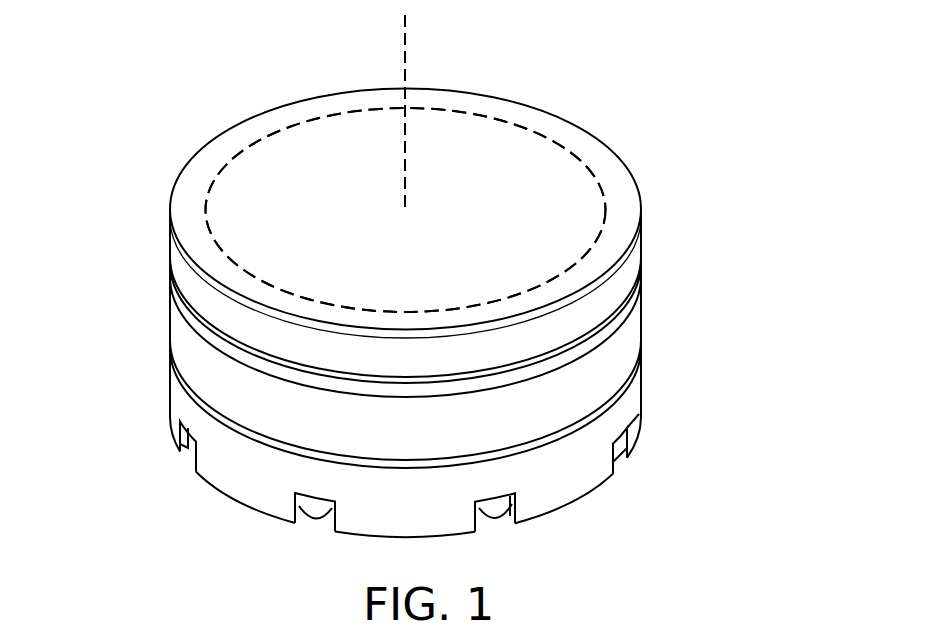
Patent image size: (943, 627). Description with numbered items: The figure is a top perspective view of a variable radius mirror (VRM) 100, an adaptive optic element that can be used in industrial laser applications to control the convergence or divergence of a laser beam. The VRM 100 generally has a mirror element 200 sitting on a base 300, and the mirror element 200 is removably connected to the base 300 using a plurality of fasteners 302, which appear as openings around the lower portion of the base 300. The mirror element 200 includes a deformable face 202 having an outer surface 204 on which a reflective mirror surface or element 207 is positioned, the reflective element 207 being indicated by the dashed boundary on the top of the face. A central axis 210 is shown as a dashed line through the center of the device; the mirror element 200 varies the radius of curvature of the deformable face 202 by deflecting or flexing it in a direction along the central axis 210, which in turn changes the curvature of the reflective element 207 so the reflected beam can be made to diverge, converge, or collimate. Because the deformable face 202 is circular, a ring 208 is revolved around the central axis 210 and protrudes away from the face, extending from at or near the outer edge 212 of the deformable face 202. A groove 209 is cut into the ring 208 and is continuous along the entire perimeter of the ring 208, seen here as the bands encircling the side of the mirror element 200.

The variable radius mirror 100 is at (709, 121).
The mirror element 200 is at (641, 327).
The deformable face 202 is at (450, 135).
The outer surface 204 is at (563, 137).
The reflective mirror surface 207 is at (253, 217).
The ring 208 is at (172, 323).
The groove 209 is at (641, 287).
The central axis 210 is at (405, 210).
The outer edge 212 is at (207, 153).
The base 300 is at (641, 390).
The fasteners 302 is at (618, 450).